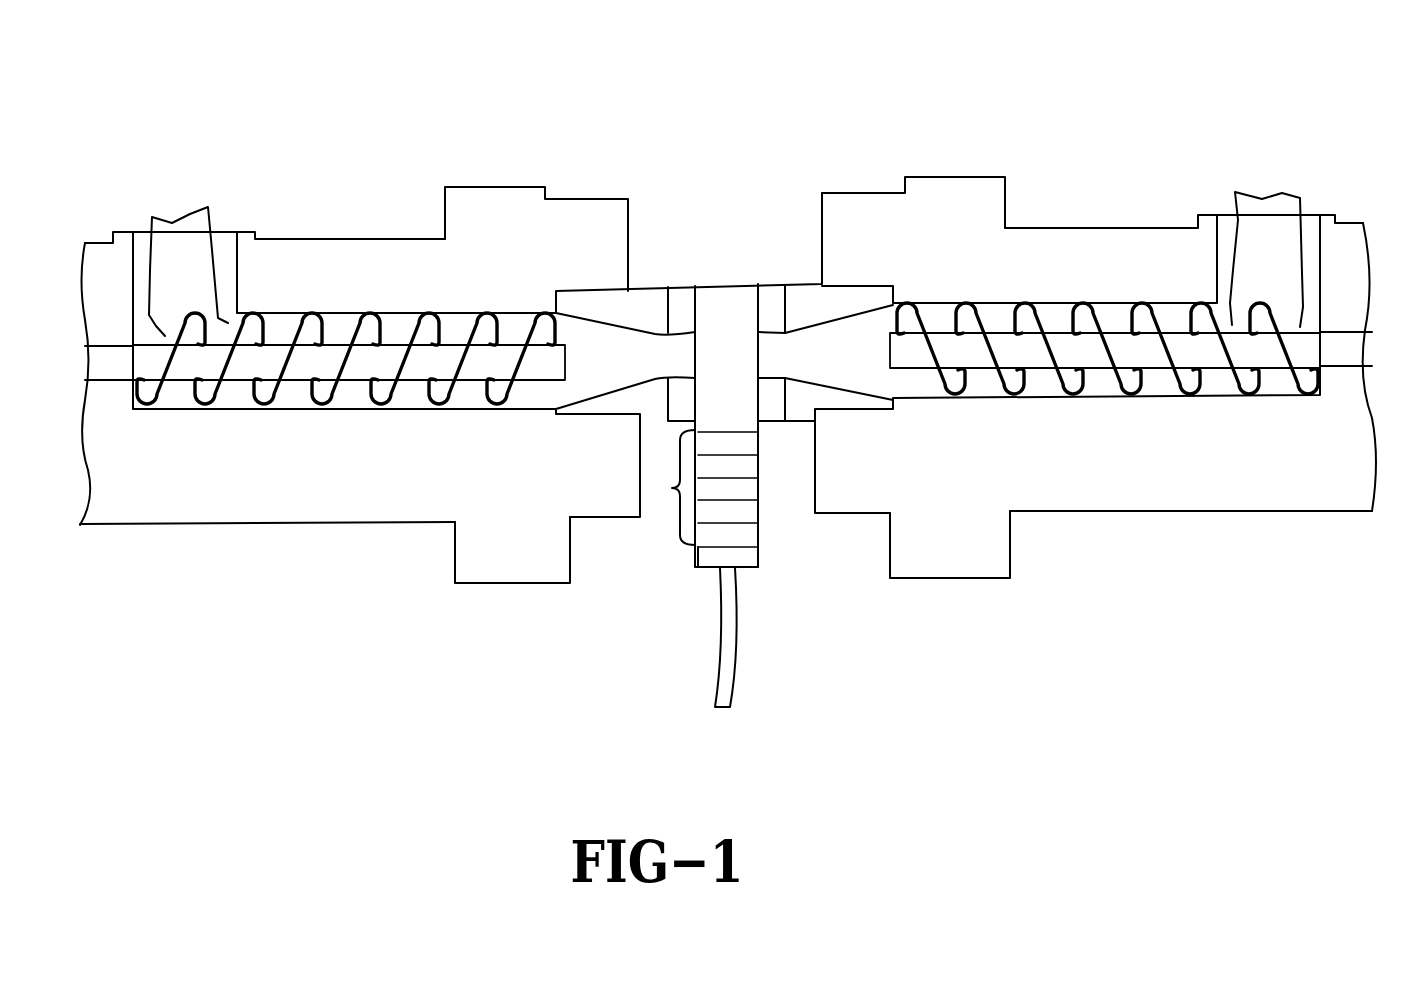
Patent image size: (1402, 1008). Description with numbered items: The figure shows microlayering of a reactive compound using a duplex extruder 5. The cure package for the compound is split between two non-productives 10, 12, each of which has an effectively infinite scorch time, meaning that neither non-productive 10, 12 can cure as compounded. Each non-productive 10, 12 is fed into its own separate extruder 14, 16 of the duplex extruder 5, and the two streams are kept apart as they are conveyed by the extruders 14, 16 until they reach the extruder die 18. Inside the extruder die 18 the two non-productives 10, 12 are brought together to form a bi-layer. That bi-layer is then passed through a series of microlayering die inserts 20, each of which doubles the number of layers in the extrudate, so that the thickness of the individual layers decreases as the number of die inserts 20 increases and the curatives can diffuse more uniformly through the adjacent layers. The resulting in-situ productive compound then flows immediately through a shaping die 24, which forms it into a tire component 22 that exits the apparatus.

The duplex extruder 5 is at (297, 593).
The non-productive 10 is at (185, 232).
The non-productive 12 is at (1268, 212).
The extruder 14 is at (495, 187).
The extruder 16 is at (952, 177).
The extruder die 18 is at (733, 283).
The microlayering die inserts 20 is at (672, 488).
The tire component 22 is at (738, 653).
The shaping die 24 is at (762, 560).